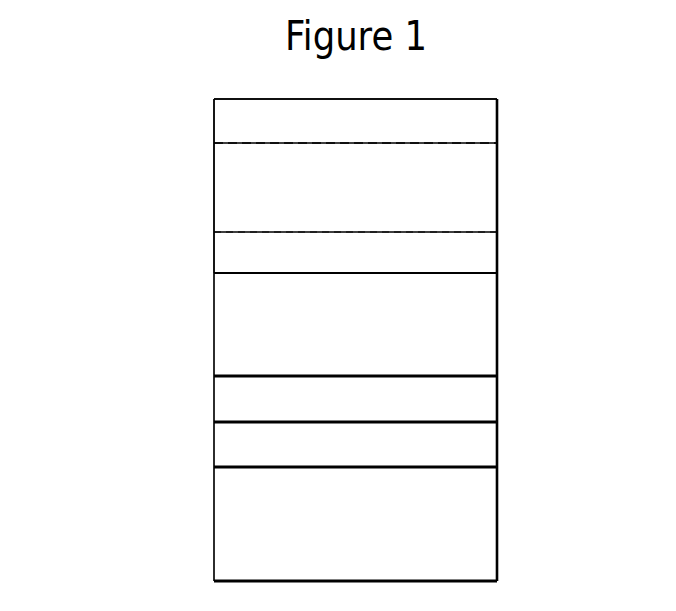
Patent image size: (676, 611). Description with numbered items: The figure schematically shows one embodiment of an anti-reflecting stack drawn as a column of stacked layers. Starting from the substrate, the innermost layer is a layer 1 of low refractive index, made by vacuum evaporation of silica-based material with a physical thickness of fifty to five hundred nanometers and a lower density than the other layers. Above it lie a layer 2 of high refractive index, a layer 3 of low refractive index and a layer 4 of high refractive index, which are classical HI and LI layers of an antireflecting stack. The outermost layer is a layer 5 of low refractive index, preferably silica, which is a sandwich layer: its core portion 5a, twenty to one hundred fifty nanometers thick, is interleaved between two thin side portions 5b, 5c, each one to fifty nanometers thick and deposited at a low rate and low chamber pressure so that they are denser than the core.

The layer of low refractive index 1 is at (497, 533).
The layer of high refractive index 2 is at (497, 450).
The layer of low refractive index 3 is at (497, 403).
The layer of high refractive index 4 is at (497, 318).
The layer of low refractive index 5 is at (525, 95).
The core portion 5a is at (213, 187).
The side portion 5b is at (213, 253).
The side portion 5c is at (213, 112).